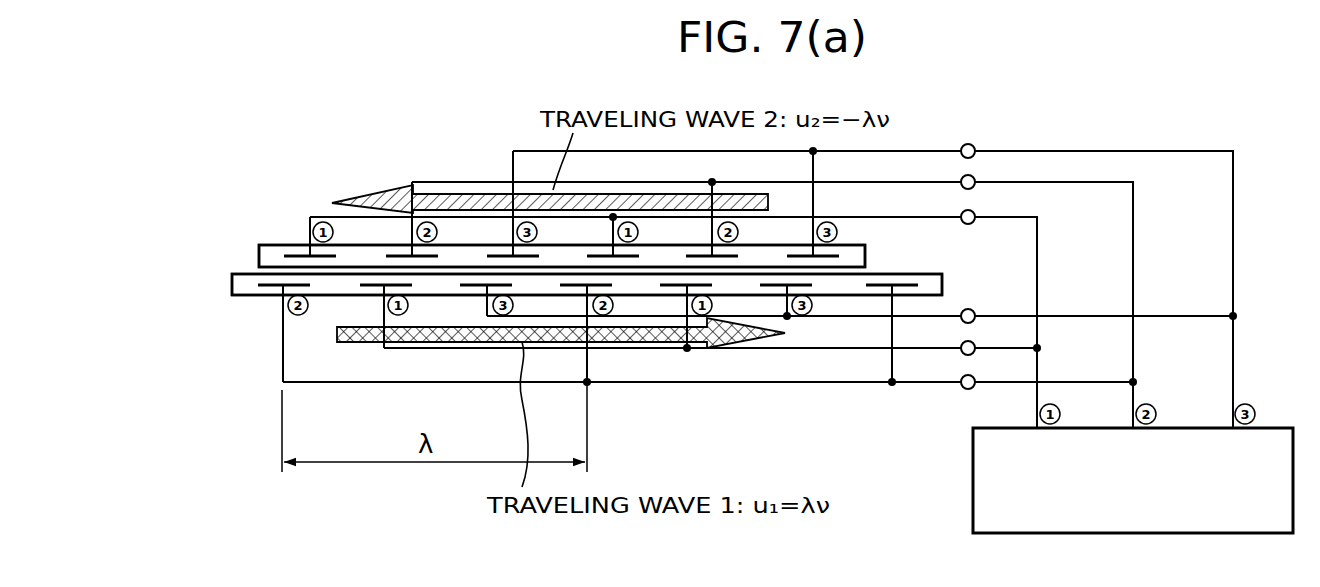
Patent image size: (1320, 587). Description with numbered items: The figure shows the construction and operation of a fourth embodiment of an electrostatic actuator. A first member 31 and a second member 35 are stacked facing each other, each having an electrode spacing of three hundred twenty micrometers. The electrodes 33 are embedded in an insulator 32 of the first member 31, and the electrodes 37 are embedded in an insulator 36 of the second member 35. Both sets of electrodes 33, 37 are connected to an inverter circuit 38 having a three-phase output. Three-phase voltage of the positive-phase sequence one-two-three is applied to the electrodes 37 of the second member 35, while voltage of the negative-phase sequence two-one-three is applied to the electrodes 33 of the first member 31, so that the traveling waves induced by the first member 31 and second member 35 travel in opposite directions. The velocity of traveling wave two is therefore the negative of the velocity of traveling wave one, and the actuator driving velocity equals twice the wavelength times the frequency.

The first member 31 is at (232, 284).
The insulator 32 is at (243, 288).
The electrodes 33 is at (268, 290).
The second member 35 is at (258, 247).
The insulator 36 is at (266, 247).
The electrodes 37 is at (300, 253).
The inverter circuit 38 is at (973, 493).